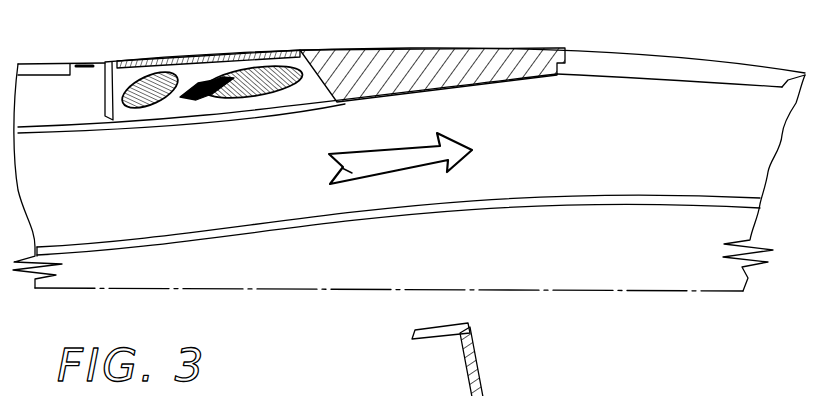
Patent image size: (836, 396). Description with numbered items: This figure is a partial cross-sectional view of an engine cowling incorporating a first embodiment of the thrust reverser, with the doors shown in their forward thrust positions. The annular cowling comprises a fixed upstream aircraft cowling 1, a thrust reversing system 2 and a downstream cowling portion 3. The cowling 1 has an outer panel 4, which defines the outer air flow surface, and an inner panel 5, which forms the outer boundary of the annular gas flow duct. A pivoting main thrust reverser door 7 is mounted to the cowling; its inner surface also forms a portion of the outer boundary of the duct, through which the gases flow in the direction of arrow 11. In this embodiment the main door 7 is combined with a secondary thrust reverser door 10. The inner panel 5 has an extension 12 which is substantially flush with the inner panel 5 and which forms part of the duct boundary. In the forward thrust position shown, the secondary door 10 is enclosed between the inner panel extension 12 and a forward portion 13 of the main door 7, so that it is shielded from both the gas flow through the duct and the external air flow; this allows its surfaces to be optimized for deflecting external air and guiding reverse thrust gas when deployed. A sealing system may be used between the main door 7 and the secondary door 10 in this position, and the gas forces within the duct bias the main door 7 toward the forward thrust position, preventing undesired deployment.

The aircraft cowling 1 is at (80, 107).
The thrust reversing system 2 is at (530, 42).
The downstream cowling portion 3 is at (670, 67).
The outer panel 4 is at (52, 67).
The inner panel 5 is at (48, 132).
The main thrust reverser door 7 is at (480, 63).
The secondary thrust reverser door 10 is at (247, 77).
The arrow indicating gas flow direction 11 is at (330, 184).
The inner panel extension 12 is at (230, 113).
The forward portion of the main thrust reverser door 13 is at (187, 62).